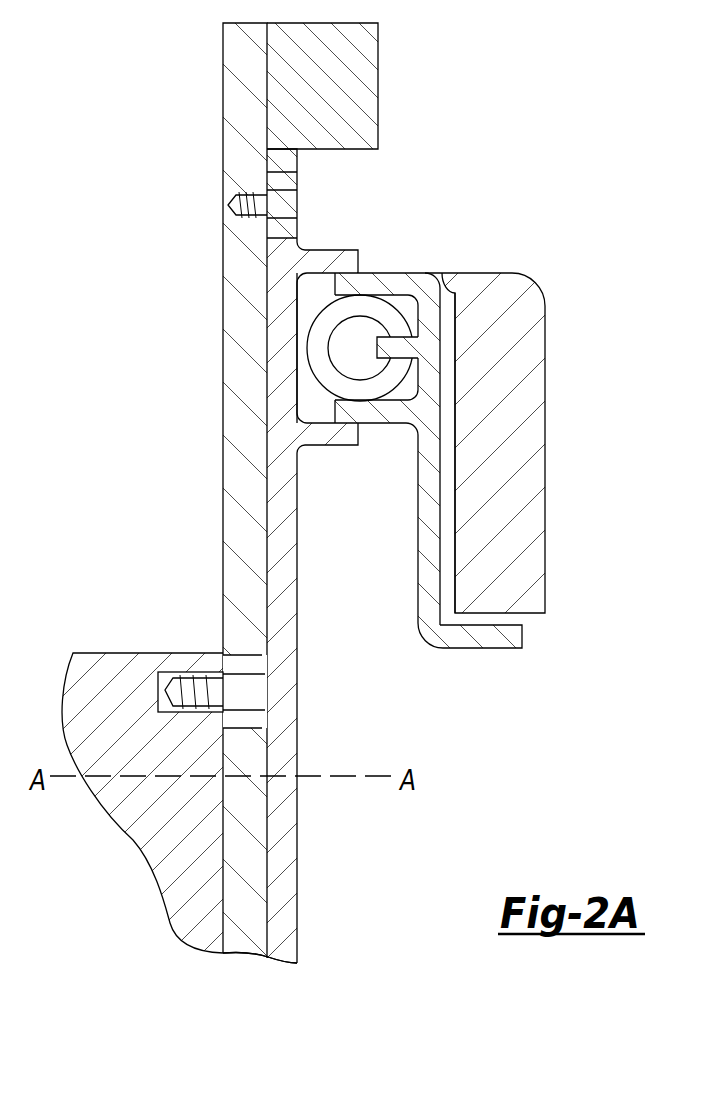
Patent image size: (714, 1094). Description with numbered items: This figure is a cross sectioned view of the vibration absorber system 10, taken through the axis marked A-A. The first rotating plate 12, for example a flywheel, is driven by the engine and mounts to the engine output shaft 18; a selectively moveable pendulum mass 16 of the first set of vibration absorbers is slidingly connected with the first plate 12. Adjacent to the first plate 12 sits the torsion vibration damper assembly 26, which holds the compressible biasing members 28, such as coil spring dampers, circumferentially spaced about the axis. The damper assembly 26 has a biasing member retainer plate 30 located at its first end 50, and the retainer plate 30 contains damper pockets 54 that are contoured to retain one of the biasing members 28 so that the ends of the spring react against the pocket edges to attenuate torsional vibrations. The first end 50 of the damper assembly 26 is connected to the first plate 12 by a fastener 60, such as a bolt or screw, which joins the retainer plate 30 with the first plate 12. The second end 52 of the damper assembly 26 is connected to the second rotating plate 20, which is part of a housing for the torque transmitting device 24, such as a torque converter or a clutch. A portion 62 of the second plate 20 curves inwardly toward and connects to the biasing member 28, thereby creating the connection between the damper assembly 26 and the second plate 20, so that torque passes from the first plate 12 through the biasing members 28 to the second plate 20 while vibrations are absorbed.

The vibration absorber system 10 is at (347, 529).
The first rotating member or plate 12 is at (238, 63).
The pendulum mass 16 is at (367, 52).
The output shaft 18 is at (148, 665).
The second rotating plate 20 is at (466, 652).
The torque transmitting device 24 is at (558, 333).
The torsion vibration damper assembly 26 is at (452, 536).
The biasing member 28 is at (382, 318).
The biasing member retainer plate 30 is at (278, 517).
The first end 50 is at (265, 987).
The second end 52 is at (388, 240).
The damper pocket 54 is at (310, 296).
The fastener 60 is at (287, 181).
The portion of the second plate 62 is at (393, 353).